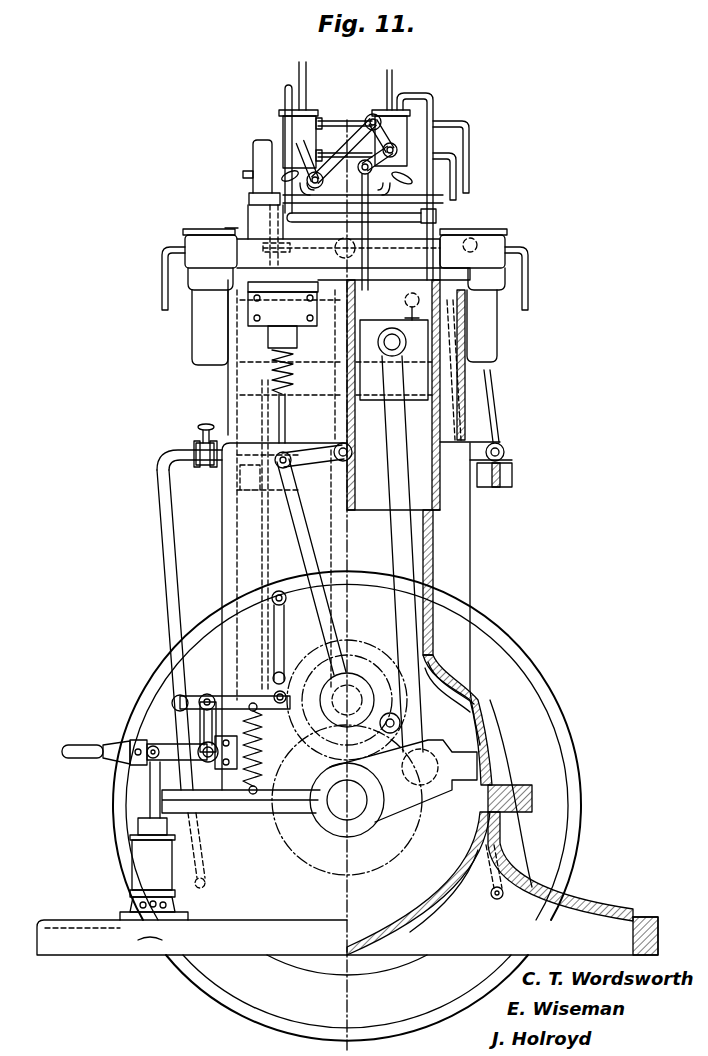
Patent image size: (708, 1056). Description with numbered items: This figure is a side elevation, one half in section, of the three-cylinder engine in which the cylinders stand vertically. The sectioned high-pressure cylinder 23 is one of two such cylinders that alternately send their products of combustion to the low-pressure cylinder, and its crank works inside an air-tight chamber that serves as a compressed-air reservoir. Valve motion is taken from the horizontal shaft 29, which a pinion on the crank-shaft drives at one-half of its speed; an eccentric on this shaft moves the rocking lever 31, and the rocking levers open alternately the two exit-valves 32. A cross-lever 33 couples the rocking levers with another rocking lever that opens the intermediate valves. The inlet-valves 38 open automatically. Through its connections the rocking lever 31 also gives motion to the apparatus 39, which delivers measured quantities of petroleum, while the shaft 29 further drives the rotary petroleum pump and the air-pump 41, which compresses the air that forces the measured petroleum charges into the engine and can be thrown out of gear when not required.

The high-pressure cylinder 23 is at (394, 520).
The horizontal shaft 29 is at (333, 658).
The rocking lever 31 is at (276, 447).
The exit-valve 32 is at (283, 362).
The cross-lever 33 is at (497, 485).
The inlet-valve 38 is at (188, 277).
The petroleum-delivering apparatus 39 is at (307, 120).
The air-pump 41 is at (154, 841).